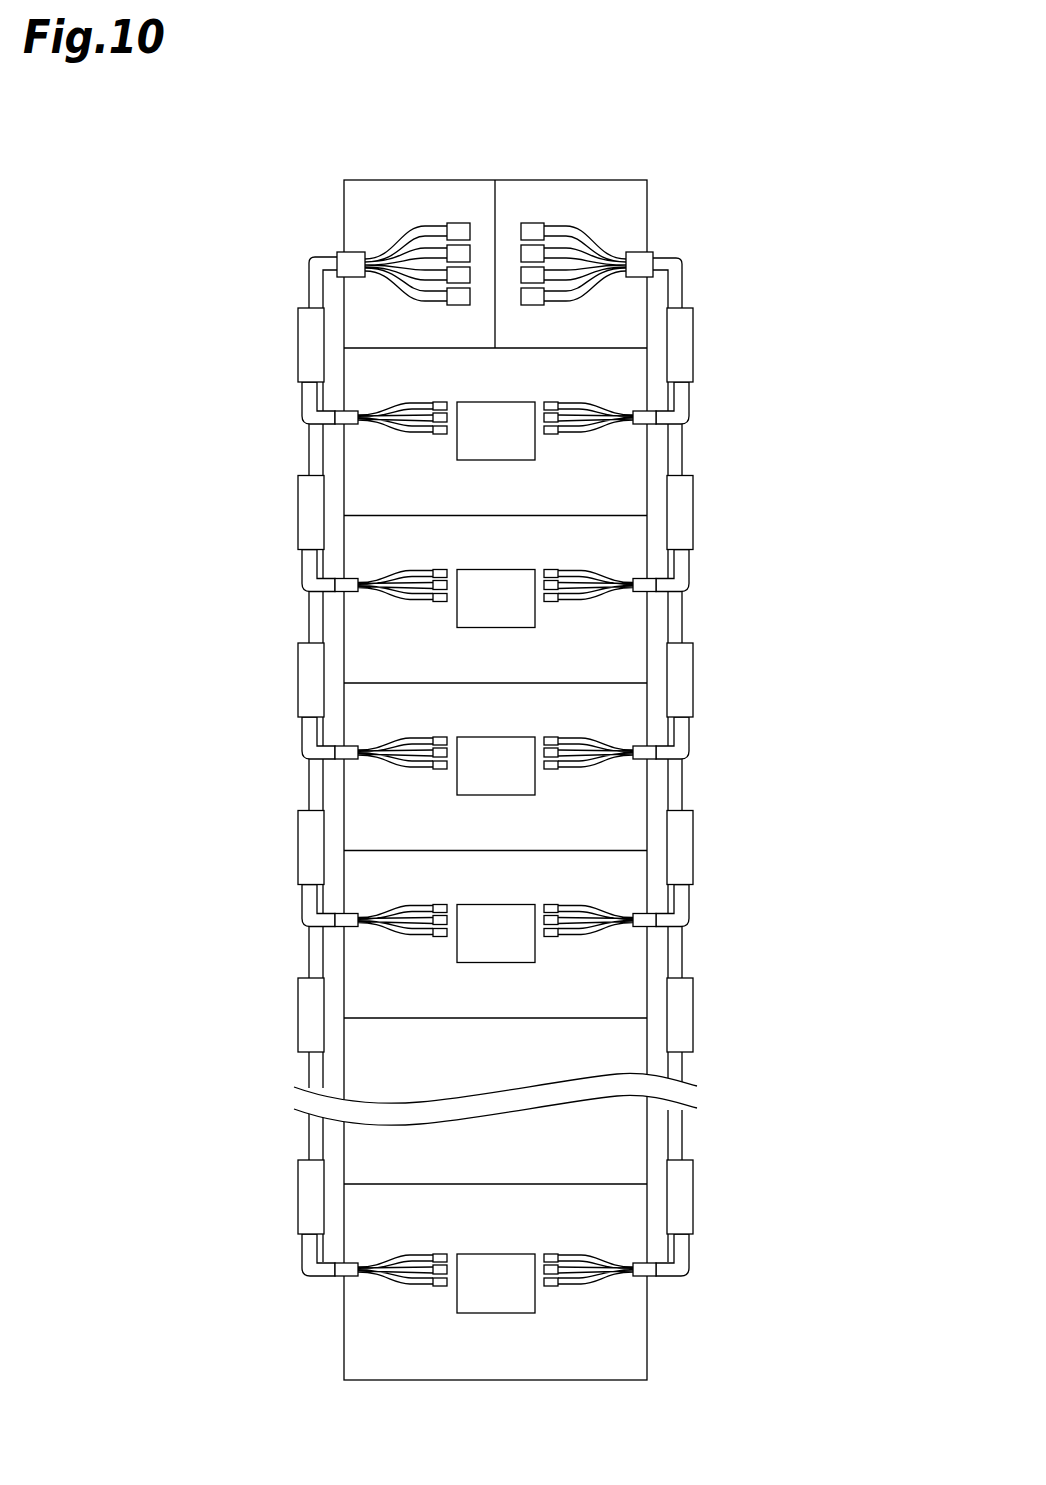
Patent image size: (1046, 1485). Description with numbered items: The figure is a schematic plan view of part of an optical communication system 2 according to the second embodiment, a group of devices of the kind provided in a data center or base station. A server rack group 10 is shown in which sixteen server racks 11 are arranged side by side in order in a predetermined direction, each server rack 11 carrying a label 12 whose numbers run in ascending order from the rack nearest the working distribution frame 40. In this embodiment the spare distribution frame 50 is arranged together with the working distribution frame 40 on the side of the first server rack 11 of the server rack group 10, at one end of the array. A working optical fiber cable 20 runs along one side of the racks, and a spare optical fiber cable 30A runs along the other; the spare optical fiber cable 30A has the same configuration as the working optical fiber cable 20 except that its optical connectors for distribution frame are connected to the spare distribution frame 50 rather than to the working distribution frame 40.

The optical communication system 2 is at (720, 152).
The server rack group 10 is at (528, 236).
The server rack 11 is at (370, 453).
The label 12 is at (515, 461).
The working optical fiber cable 20 is at (683, 1022).
The spare optical fiber cable 30A is at (309, 1026).
The working distribution frame 40 is at (572, 193).
The spare distribution frame 50 is at (423, 193).